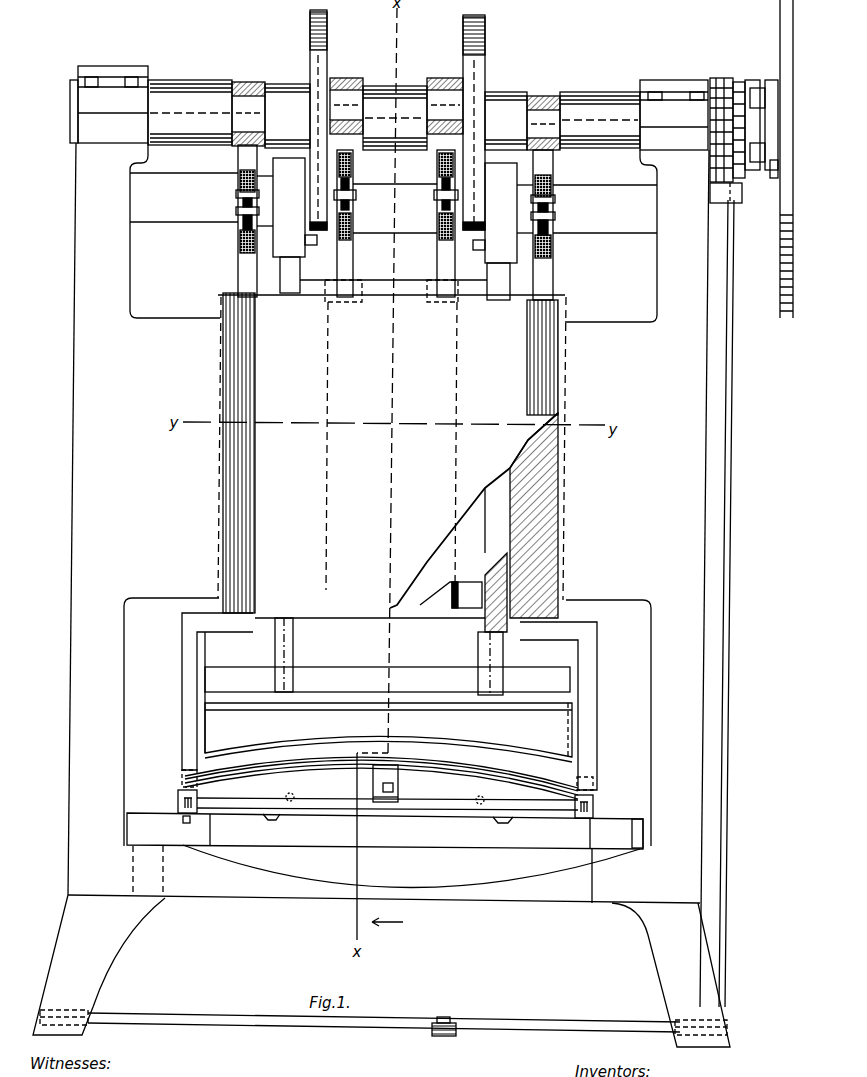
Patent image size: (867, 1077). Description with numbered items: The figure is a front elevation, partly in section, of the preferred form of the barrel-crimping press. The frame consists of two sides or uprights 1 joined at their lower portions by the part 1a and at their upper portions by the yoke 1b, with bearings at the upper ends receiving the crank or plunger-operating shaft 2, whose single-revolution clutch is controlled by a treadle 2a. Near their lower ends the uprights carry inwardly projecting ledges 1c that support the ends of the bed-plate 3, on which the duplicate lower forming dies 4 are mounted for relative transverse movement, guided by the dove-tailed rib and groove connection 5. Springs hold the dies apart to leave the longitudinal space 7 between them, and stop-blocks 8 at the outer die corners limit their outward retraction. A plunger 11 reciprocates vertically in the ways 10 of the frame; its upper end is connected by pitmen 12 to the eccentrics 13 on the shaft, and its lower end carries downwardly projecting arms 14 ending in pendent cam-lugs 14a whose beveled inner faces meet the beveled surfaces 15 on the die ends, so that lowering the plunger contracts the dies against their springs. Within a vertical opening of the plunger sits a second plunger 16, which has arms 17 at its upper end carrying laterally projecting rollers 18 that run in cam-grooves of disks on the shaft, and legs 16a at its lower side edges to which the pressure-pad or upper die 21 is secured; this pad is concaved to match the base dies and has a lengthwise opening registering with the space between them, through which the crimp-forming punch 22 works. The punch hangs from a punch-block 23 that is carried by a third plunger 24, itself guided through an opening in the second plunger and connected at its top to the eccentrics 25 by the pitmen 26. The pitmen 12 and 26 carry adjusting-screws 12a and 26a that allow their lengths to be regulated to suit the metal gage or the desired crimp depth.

The sides or uprights of the press frame 1 is at (383, 556).
The lower connecting part 1a is at (411, 869).
The yoke 1b is at (393, 203).
The inwardly projecting ledges 1c is at (379, 874).
The crank or plunger-operating shaft 2 is at (625, 118).
The treadle 2a is at (450, 1036).
The bed-plate or block 3 is at (385, 831).
The lower forming dies 4 is at (402, 783).
The dove-tailed rib and groove connection 5 is at (275, 817).
The longitudinal space 7 is at (388, 814).
The stop-blocks 8 is at (183, 816).
The ways 10 is at (378, 453).
The plunger 11 is at (368, 446).
The pitmen 12 is at (238, 262).
The adjusting-screws 12a is at (243, 210).
The eccentrics 13 is at (540, 108).
The downwardly projecting arms 14 is at (182, 667).
The pendent cam-lugs 14a is at (182, 780).
The cam or beveled surfaces 15 is at (232, 110).
The second plunger 16 is at (474, 522).
The legs or downwardly projecting extensions 16a is at (278, 652).
The arms 17 is at (395, 278).
The rollers 18 is at (308, 172).
The pressure-pad or upper die 21 is at (388, 732).
The crimp-forming punch 22 is at (345, 740).
The punch-block 23 is at (387, 679).
The plunger 24 is at (345, 685).
The eccentrics 25 is at (345, 95).
The pitmen 26 is at (352, 252).
The adjusting-screws 26a is at (352, 195).